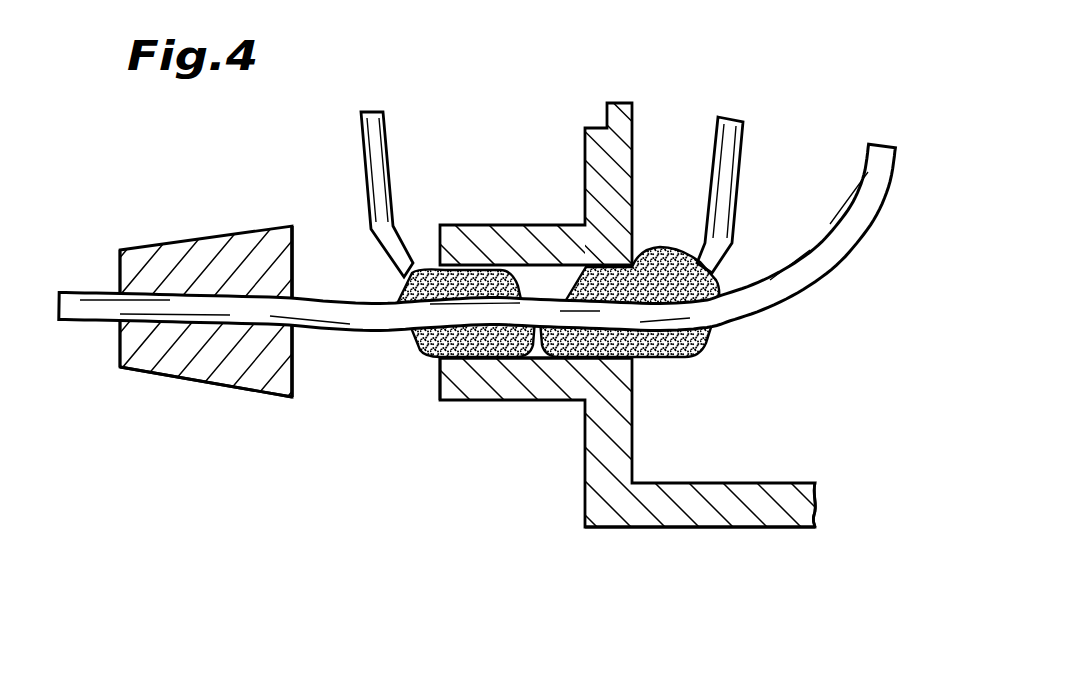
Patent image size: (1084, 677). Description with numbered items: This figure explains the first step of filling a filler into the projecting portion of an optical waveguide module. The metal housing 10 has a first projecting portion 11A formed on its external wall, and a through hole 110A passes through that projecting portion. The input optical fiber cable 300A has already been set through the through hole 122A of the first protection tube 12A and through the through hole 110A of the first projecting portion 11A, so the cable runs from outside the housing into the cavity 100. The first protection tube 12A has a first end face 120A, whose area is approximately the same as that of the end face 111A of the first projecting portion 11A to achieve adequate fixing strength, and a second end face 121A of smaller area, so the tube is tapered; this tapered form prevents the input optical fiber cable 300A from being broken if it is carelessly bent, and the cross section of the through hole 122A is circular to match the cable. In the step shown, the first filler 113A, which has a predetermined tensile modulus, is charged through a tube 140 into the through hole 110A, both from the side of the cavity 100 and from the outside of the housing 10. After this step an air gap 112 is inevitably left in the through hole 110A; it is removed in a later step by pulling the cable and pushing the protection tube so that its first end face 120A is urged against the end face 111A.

The metal housing 10 is at (668, 505).
The cavity 100 is at (780, 445).
The first projecting portion 11A is at (547, 390).
The through hole 110A is at (492, 360).
The end face 111A is at (438, 378).
The air gap 112 is at (540, 277).
The first filler 113A is at (417, 360).
The first protection tube 12A is at (197, 236).
The first end face 120A is at (294, 258).
The second end face 121A is at (118, 267).
The through hole 122A is at (217, 327).
The tube 140 is at (387, 157).
The input optical fiber cable 300A is at (857, 258).